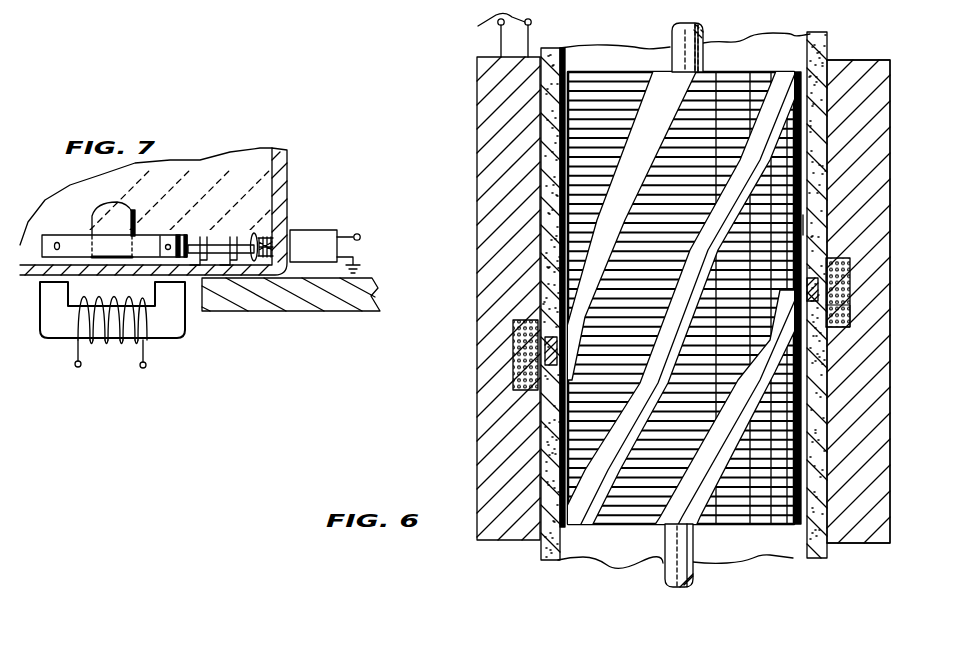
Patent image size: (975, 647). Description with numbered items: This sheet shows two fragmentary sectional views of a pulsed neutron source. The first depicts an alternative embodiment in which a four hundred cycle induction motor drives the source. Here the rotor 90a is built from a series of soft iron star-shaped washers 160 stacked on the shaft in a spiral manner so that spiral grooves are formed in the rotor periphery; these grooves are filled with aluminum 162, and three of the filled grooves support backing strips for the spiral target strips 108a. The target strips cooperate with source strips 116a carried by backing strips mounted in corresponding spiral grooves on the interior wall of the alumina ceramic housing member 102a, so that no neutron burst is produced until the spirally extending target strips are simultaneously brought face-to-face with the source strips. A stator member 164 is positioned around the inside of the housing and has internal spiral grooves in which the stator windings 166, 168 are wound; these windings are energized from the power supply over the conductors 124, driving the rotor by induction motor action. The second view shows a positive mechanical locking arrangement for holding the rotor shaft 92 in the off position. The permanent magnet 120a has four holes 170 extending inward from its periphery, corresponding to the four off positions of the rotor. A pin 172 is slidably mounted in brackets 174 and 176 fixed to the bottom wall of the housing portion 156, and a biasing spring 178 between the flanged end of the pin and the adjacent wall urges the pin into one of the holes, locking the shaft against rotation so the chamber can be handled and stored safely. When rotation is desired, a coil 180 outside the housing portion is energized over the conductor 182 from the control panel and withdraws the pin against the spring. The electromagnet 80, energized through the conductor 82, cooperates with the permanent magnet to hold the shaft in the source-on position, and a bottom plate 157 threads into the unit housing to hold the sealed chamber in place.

In FIG. 7, the electromagnet 80 is at (108, 342).
In FIG. 7, the conductor 82 is at (77, 352).
In FIG. 7, the rotor shaft 92 is at (135, 210).
In FIG. 7, the permanent magnet 120a is at (137, 240).
In FIG. 7, the bottom portion of the cup-shaped housing member 156 is at (280, 172).
In FIG. 7, the bottom plate 157 is at (277, 300).
In FIG. 7, the holes 170 is at (57, 242).
In FIG. 7, the pin 172 is at (214, 236).
In FIG. 7, the bracket 174 is at (204, 237).
In FIG. 7, the bracket 176 is at (231, 237).
In FIG. 7, the biasing spring 178 is at (264, 240).
In FIG. 7, the coil 180 is at (318, 240).
In FIG. 7, the conductor 182 is at (351, 233).
In FIG. 6, the alumina ceramic housing member 102a is at (827, 157).
In FIG. 6, the spiral target strips 108a is at (610, 428).
In FIG. 6, the source strips 116a is at (520, 348).
In FIG. 6, the conductors 124 is at (478, 26).
In FIG. 6, the soft iron star-shaped washers 160 is at (600, 97).
In FIG. 6, the aluminum 162 is at (629, 302).
In FIG. 6, the stator member 164 is at (878, 312).
In FIG. 6, the stator winding 166 is at (850, 325).
In FIG. 6, the stator winding 168 is at (510, 317).
In FIG. 6, the rotor 90a is at (803, 225).